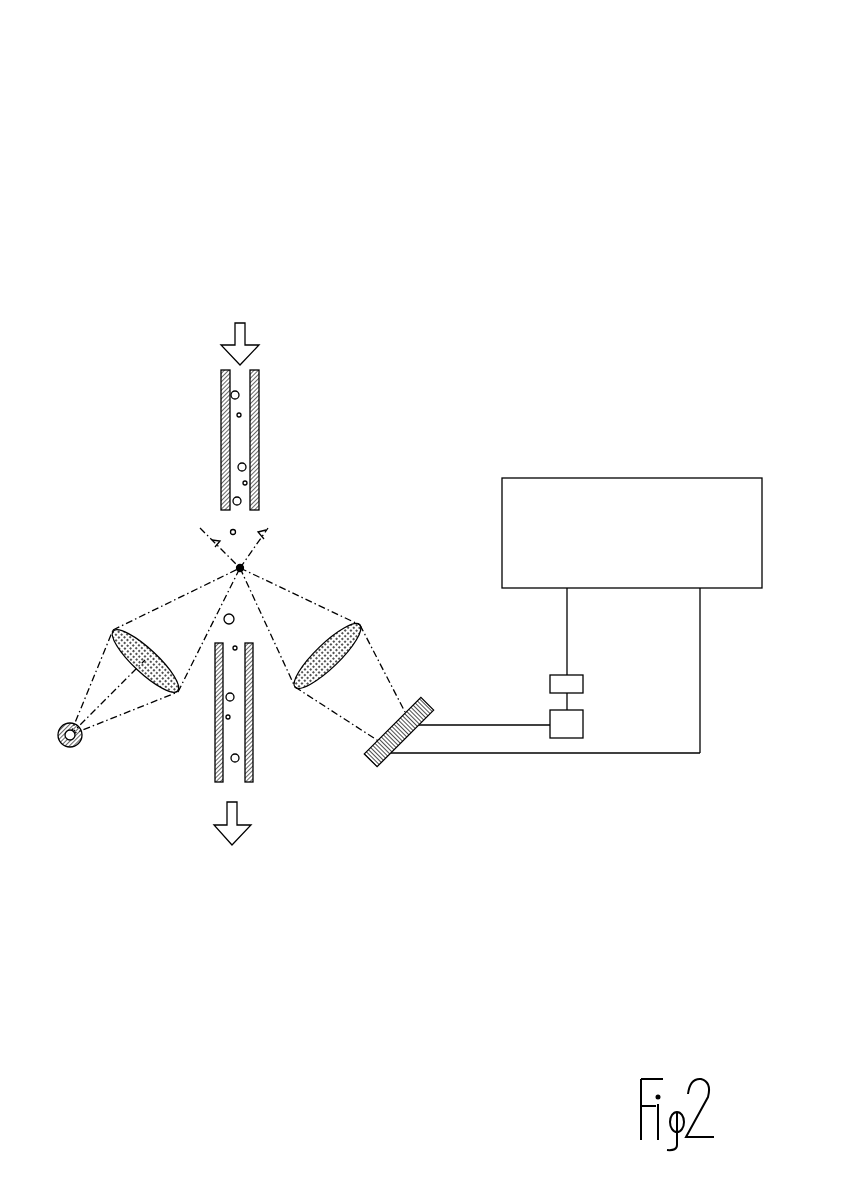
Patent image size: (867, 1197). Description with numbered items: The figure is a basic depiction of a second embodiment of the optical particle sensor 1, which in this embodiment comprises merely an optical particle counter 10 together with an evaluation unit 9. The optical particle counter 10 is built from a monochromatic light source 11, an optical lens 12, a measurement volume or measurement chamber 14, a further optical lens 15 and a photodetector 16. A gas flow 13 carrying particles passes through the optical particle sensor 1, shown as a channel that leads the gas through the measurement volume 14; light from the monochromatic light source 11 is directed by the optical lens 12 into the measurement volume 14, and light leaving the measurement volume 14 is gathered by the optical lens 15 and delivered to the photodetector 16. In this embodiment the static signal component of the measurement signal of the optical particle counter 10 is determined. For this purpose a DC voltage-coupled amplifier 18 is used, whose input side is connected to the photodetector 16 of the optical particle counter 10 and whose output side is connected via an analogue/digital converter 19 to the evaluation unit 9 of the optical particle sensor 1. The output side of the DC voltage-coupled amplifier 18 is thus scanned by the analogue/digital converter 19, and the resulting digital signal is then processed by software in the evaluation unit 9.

The optical particle sensor 1 is at (620, 193).
The evaluation unit 9 is at (630, 518).
The optical particle counter 10 is at (177, 517).
The monochromatic light source 11 is at (66, 748).
The optical lens 12 is at (130, 652).
The gas flow 13 is at (239, 446).
The measurement volume 14 is at (247, 562).
The optical lens 15 is at (336, 642).
The photodetector 16 is at (386, 760).
The DC voltage-coupled amplifier 18 is at (575, 722).
The analogue/digital converter 19 is at (578, 685).